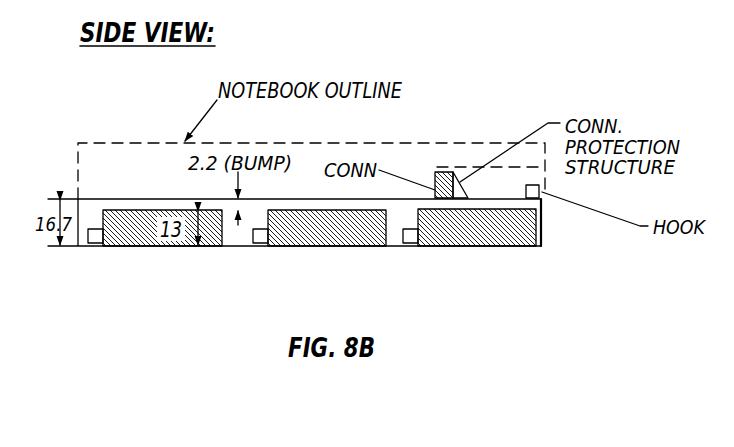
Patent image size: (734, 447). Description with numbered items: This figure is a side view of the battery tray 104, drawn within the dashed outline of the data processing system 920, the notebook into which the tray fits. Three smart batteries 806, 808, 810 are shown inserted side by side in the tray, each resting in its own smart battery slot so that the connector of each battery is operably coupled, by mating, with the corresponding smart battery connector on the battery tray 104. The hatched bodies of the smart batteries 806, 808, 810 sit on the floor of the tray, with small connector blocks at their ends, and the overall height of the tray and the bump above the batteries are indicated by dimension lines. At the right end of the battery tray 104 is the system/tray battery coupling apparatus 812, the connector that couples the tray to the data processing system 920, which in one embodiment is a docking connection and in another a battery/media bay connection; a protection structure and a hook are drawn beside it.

The data processing system 920 is at (143, 142).
The system/tray battery coupling apparatus 812 is at (435, 183).
The smart battery 806 is at (142, 236).
The smart battery 808 is at (330, 236).
The smart battery 810 is at (477, 246).
The battery tray 104 is at (547, 225).